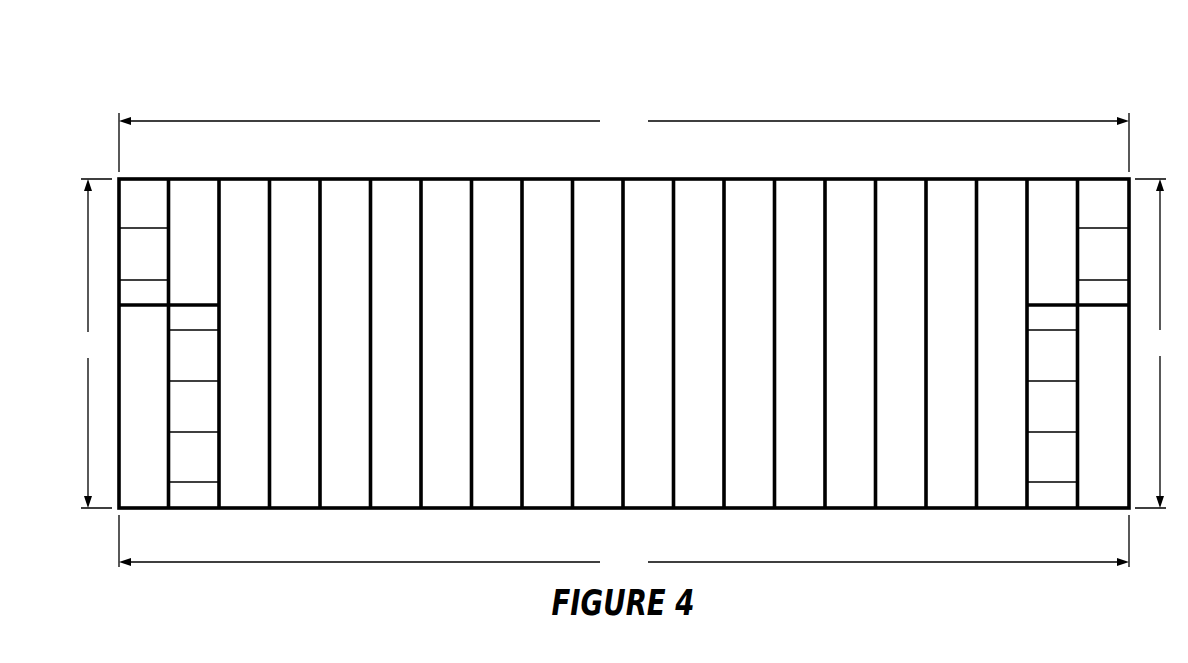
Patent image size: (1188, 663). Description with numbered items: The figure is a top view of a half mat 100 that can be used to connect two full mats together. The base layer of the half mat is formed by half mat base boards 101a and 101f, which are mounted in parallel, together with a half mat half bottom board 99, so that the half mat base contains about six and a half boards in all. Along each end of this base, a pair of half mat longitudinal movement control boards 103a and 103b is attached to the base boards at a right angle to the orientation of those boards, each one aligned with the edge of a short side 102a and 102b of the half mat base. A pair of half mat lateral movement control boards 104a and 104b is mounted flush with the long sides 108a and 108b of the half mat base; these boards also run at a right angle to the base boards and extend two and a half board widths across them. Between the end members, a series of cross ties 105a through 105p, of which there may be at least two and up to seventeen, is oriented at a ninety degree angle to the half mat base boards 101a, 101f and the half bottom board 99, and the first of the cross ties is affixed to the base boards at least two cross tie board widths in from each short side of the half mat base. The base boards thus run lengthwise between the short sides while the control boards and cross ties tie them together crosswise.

The half mat 100 is at (1104, 95).
The half mat half bottom board 99 is at (193, 495).
The half mat base board 101a is at (1057, 455).
The half mat base board 101f is at (142, 197).
The short side of the half mat base 102a is at (89, 343).
The short side of the half mat base 102b is at (1158, 343).
The half mat longitudinal movement control board 103a is at (140, 490).
The half mat longitudinal movement control board 103b is at (1110, 495).
The half mat lateral movement control board 104a is at (192, 192).
The half mat lateral movement control board 104b is at (1057, 192).
The cross tie 105a is at (243, 197).
The cross tie 105p is at (1006, 197).
The long side of the half mat base 108a is at (624, 142).
The long side of the half mat base 108b is at (624, 543).